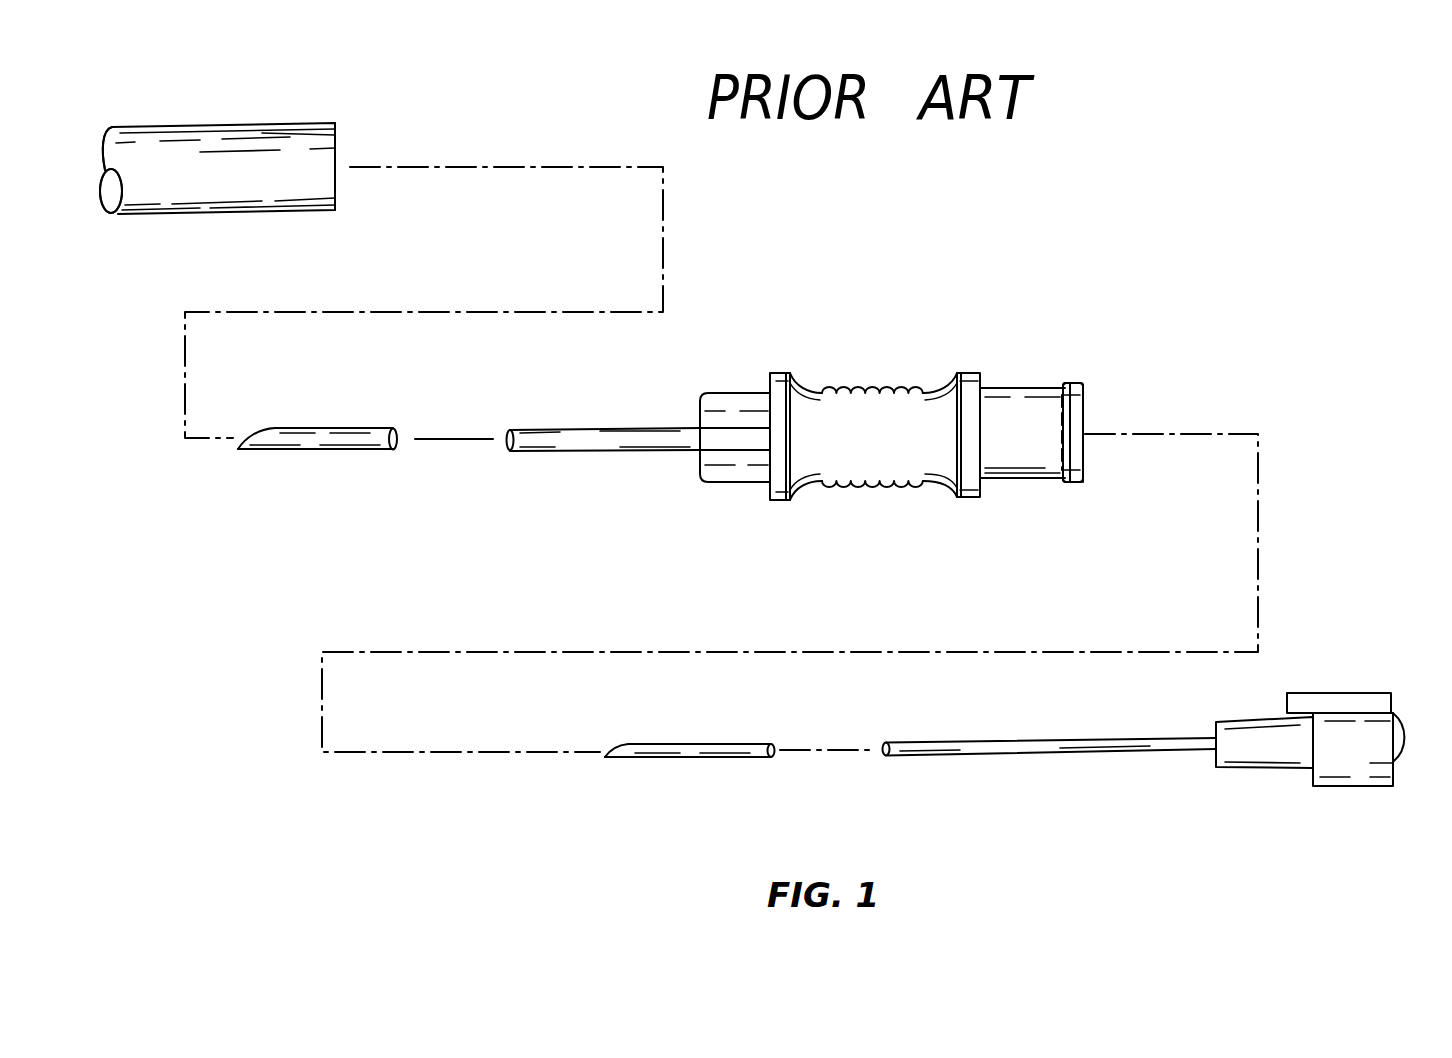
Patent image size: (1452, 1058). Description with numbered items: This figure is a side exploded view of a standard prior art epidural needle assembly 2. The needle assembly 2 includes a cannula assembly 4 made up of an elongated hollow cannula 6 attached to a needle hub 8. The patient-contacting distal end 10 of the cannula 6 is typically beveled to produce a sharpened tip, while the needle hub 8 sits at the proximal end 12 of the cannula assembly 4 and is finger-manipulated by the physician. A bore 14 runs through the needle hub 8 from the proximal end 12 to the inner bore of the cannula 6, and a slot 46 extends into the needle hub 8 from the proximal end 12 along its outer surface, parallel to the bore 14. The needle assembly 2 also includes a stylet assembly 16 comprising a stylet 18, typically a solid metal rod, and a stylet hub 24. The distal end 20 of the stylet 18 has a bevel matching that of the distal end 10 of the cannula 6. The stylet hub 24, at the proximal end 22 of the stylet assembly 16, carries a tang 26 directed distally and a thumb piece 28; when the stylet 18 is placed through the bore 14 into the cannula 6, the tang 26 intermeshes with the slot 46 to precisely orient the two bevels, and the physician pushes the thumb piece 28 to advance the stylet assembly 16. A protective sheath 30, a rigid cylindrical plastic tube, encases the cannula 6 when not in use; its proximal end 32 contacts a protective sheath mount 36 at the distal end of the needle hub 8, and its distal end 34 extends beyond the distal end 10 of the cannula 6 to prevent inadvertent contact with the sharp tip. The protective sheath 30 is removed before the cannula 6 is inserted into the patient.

The needle assembly 2 is at (1122, 225).
The cannula assembly 4 is at (882, 366).
The cannula 6 is at (335, 428).
The needle hub 8 is at (921, 408).
The distal end 10 is at (243, 452).
The proximal end 12 is at (1122, 380).
The bore 14 is at (1085, 452).
The stylet assembly 16 is at (1068, 720).
The stylet 18 is at (722, 748).
The distal end 20 is at (603, 742).
The proximal end 22 is at (1415, 662).
The stylet hub 24 is at (1262, 765).
The tang 26 is at (1306, 700).
The thumb piece 28 is at (1398, 720).
The protective sheath 30 is at (295, 125).
The proximal end 32 is at (348, 184).
The distal end 34 is at (158, 70).
The protective sheath mount 36 is at (702, 420).
The slot 46 is at (1051, 403).